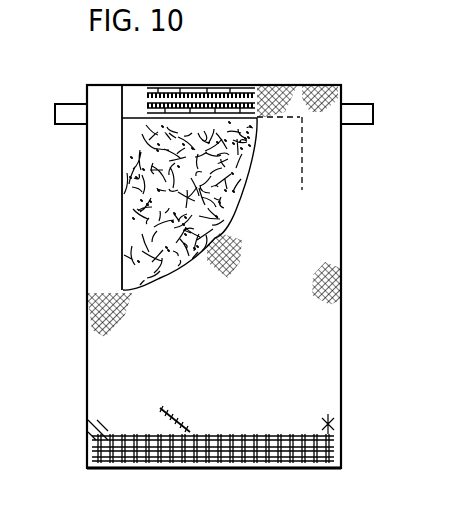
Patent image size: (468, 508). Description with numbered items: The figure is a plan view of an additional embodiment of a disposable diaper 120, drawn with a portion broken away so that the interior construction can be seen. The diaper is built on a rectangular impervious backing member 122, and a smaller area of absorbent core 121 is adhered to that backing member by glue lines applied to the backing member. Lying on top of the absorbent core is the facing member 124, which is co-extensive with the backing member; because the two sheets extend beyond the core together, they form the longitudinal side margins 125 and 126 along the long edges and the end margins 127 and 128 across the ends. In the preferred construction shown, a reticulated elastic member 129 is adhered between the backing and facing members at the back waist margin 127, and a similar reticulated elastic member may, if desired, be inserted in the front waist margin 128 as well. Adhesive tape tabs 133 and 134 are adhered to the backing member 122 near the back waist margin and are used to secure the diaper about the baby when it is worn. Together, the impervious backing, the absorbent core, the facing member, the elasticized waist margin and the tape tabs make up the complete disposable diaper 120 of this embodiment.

The disposable diaper 120 is at (88, 296).
The absorbent core 121 is at (128, 167).
The impervious backing member 122 is at (128, 118).
The facing member 124 is at (302, 127).
The longitudinal side margin 125 is at (104, 198).
The longitudinal side margin 126 is at (340, 278).
The back waist margin 127 is at (187, 90).
The front waist margin 128 is at (212, 433).
The reticulated elastic member 129 is at (218, 103).
The adhesive tape tab 133 is at (66, 108).
The adhesive tape tab 134 is at (357, 108).